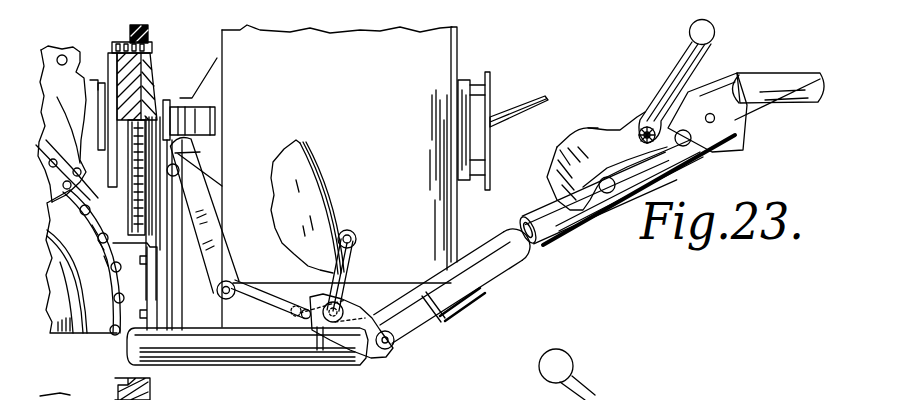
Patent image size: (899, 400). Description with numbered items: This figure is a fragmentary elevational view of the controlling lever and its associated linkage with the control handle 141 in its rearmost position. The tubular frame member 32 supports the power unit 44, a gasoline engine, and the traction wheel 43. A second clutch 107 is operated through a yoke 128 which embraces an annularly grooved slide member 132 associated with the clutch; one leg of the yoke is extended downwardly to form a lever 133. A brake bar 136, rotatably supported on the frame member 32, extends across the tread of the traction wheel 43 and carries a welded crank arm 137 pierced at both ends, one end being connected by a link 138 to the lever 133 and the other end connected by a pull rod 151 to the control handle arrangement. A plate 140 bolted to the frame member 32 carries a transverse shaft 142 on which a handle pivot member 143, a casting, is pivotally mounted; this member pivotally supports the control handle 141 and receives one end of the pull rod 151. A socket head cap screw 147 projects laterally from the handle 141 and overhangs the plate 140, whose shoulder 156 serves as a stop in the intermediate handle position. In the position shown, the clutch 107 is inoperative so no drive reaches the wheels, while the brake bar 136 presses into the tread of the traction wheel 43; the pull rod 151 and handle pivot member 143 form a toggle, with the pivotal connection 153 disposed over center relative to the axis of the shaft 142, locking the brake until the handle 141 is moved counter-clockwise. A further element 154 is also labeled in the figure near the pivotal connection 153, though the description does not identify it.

The second clutch 107 is at (115, 37).
The slide member 132 is at (170, 100).
The yoke 128 is at (187, 156).
The power unit 44 is at (388, 76).
The traction wheel 43 is at (318, 173).
The lever 133 is at (212, 233).
The brake bar 136 is at (355, 258).
The link 138 is at (248, 303).
The tubular frame member 32 is at (305, 369).
The crank arm 137 is at (355, 362).
The pull rod 151 is at (477, 298).
The plate 140 is at (572, 137).
The shoulder 156 is at (597, 128).
The socket head cap screw 147 is at (641, 124).
The control handle 141 is at (677, 64).
The shaft 142 is at (607, 194).
The handle pivot member 143 is at (630, 192).
The pivotal connection 153 is at (690, 152).
The pin end 154 is at (672, 179).